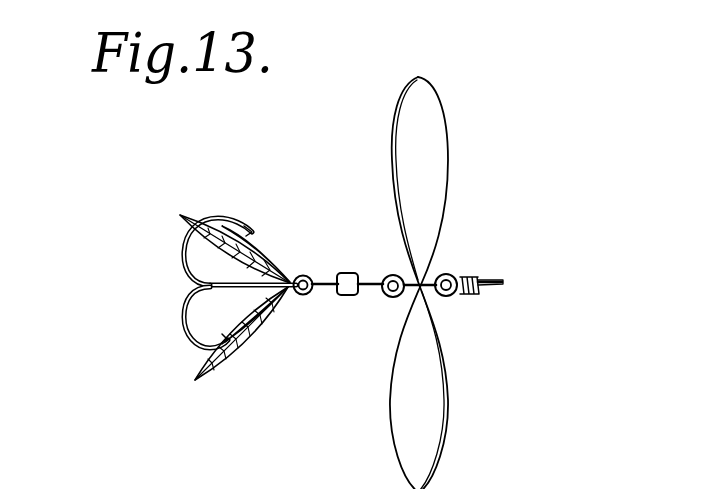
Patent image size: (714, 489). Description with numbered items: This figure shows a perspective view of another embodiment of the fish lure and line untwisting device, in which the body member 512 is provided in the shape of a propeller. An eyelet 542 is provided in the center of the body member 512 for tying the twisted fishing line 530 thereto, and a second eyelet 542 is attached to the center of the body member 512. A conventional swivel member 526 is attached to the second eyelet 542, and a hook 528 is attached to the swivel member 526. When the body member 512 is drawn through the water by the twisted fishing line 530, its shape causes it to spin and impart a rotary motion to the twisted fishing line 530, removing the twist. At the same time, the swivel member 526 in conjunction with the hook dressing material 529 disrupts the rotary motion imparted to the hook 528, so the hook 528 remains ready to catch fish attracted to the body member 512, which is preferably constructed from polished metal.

The body member 512 is at (423, 168).
The swivel member 526 is at (352, 292).
The hook 528 is at (193, 338).
The hook dressing material 529 is at (225, 255).
The twisted fishing line 530 is at (498, 286).
The eyelet 542 is at (385, 278).